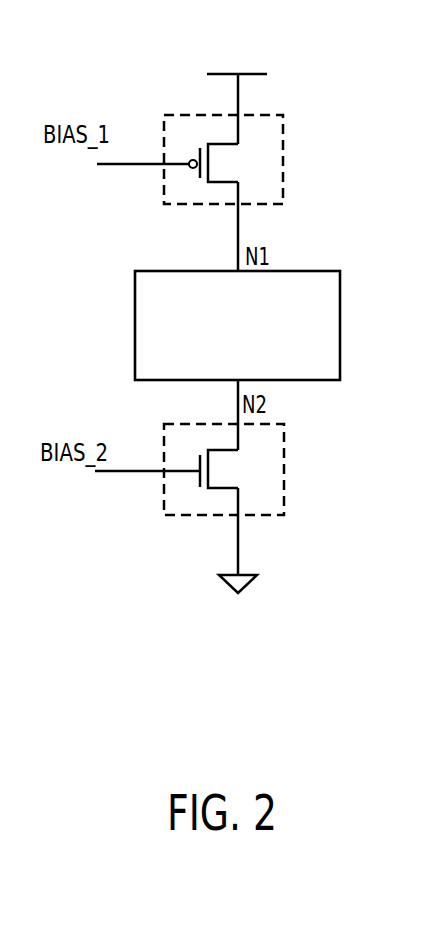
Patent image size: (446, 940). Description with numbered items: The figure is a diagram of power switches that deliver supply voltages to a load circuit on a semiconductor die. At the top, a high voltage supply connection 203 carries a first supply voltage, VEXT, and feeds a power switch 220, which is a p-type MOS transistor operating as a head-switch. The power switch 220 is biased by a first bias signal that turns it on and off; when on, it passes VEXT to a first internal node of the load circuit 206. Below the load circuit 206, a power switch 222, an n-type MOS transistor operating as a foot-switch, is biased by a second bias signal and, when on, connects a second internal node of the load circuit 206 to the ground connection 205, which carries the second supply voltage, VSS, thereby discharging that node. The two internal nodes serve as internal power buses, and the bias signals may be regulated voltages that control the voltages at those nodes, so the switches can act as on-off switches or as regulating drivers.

The high voltage supply connection 203 is at (252, 62).
The power switch 220 is at (285, 148).
The load circuit 206 is at (237, 325).
The power switch 222 is at (285, 459).
The ground connection 205 is at (283, 540).